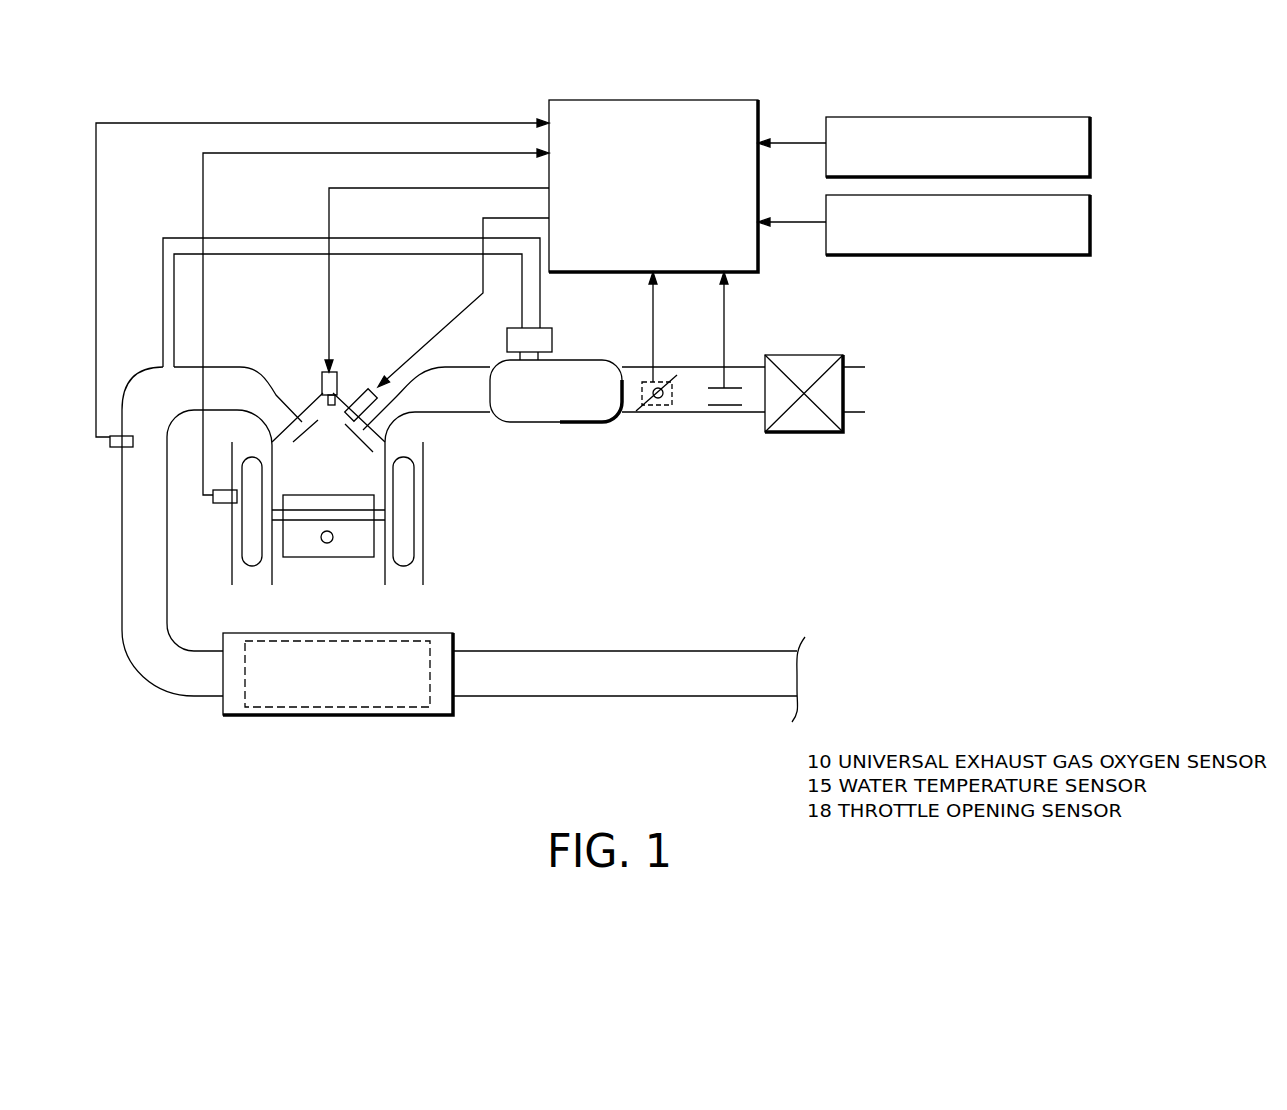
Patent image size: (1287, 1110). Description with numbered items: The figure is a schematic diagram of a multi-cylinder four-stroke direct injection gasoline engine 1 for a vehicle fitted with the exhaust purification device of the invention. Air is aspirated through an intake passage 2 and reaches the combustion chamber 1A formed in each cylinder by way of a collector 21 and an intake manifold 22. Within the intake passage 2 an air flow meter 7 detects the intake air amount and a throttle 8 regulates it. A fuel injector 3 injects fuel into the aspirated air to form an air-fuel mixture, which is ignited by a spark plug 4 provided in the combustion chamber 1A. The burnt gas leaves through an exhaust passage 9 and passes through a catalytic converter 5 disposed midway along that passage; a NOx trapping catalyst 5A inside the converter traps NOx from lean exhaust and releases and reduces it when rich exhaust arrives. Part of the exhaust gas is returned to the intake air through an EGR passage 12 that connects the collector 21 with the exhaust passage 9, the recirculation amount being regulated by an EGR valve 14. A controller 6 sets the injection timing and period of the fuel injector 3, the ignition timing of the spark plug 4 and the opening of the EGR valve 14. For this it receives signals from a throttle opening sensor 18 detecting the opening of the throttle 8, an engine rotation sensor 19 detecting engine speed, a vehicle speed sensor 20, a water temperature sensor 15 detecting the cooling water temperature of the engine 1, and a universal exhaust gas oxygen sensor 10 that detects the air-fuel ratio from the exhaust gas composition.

The engine 1 is at (449, 504).
The combustion chamber 1A is at (347, 478).
The intake passage 2 is at (655, 416).
The fuel injector 3 is at (370, 386).
The spark plug 4 is at (322, 378).
The catalytic converter 5 is at (282, 716).
The NOx trapping catalyst 5A is at (397, 708).
The controller 6 is at (707, 100).
The air flow meter 7 is at (723, 406).
The throttle 8 is at (668, 378).
The exhaust passage 9 is at (122, 650).
The universal exhaust gas oxygen sensor 10 is at (112, 449).
The exhaust gas recirculation (EGR) passage 12 is at (255, 237).
The EGR valve 14 is at (553, 338).
The water temperature sensor 15 is at (222, 504).
The throttle opening sensor 18 is at (645, 380).
The engine rotation sensor 19 is at (890, 117).
The vehicle speed sensor 20 is at (900, 258).
The collector 21 is at (570, 424).
The intake manifold 22 is at (440, 416).